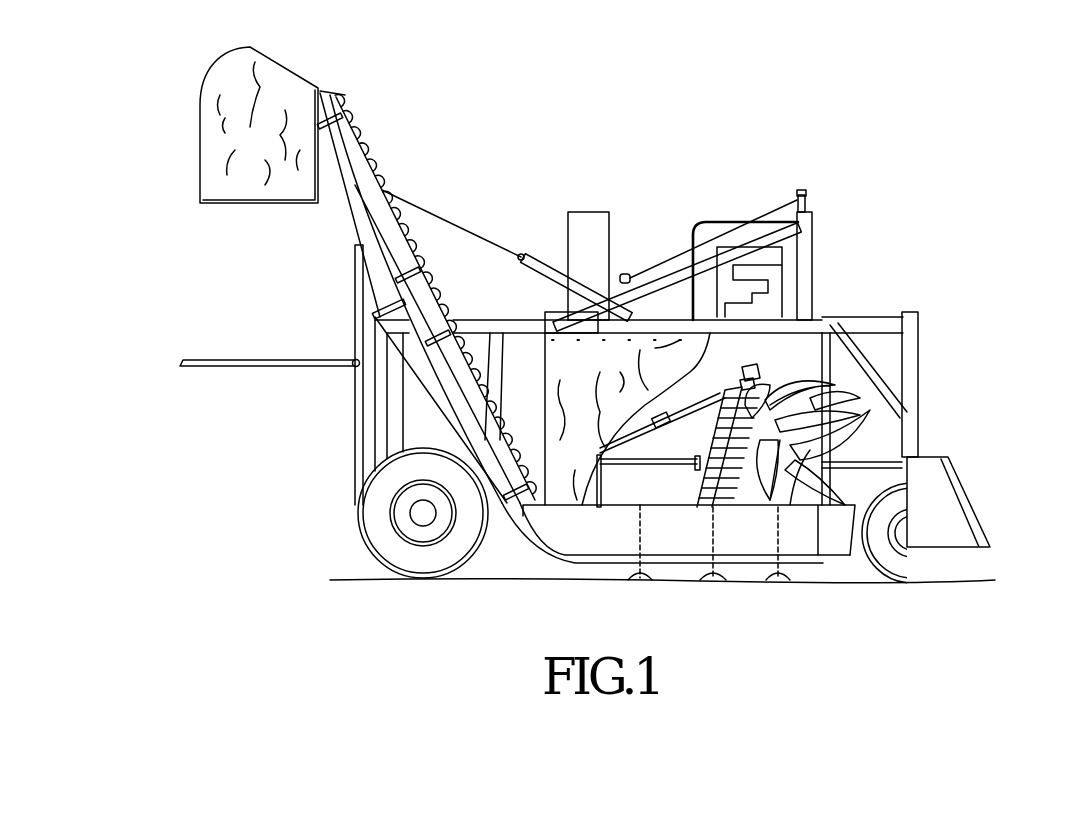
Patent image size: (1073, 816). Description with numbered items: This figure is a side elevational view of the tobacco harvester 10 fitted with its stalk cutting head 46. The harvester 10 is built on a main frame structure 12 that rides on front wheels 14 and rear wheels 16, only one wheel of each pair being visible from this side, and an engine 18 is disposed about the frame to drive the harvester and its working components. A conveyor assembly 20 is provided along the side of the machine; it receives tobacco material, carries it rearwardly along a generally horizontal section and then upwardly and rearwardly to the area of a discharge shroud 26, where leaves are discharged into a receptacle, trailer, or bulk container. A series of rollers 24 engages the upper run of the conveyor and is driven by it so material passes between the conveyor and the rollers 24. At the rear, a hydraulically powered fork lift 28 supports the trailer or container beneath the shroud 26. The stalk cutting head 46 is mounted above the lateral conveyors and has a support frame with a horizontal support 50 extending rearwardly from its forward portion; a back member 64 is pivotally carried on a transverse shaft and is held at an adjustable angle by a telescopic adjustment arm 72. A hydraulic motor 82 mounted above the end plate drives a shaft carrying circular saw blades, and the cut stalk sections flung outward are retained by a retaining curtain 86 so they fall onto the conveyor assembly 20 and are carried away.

The tobacco harvester 10 is at (980, 99).
The main frame structure 12 is at (817, 327).
The front wheels 14 is at (941, 562).
The rear wheels 16 is at (360, 520).
The engine 18 is at (777, 277).
The conveyor assembly 20 is at (505, 563).
The rollers 24 is at (392, 196).
The discharge shroud 26 is at (200, 148).
The fork lift 28 is at (252, 360).
The stalk cutting head 46 is at (790, 355).
The horizontal support 50 is at (647, 470).
The back member 64 is at (650, 458).
The telescopic adjustment arm 72 is at (670, 432).
The hydraulic motor 82 is at (752, 373).
The retaining curtain 86 is at (660, 347).